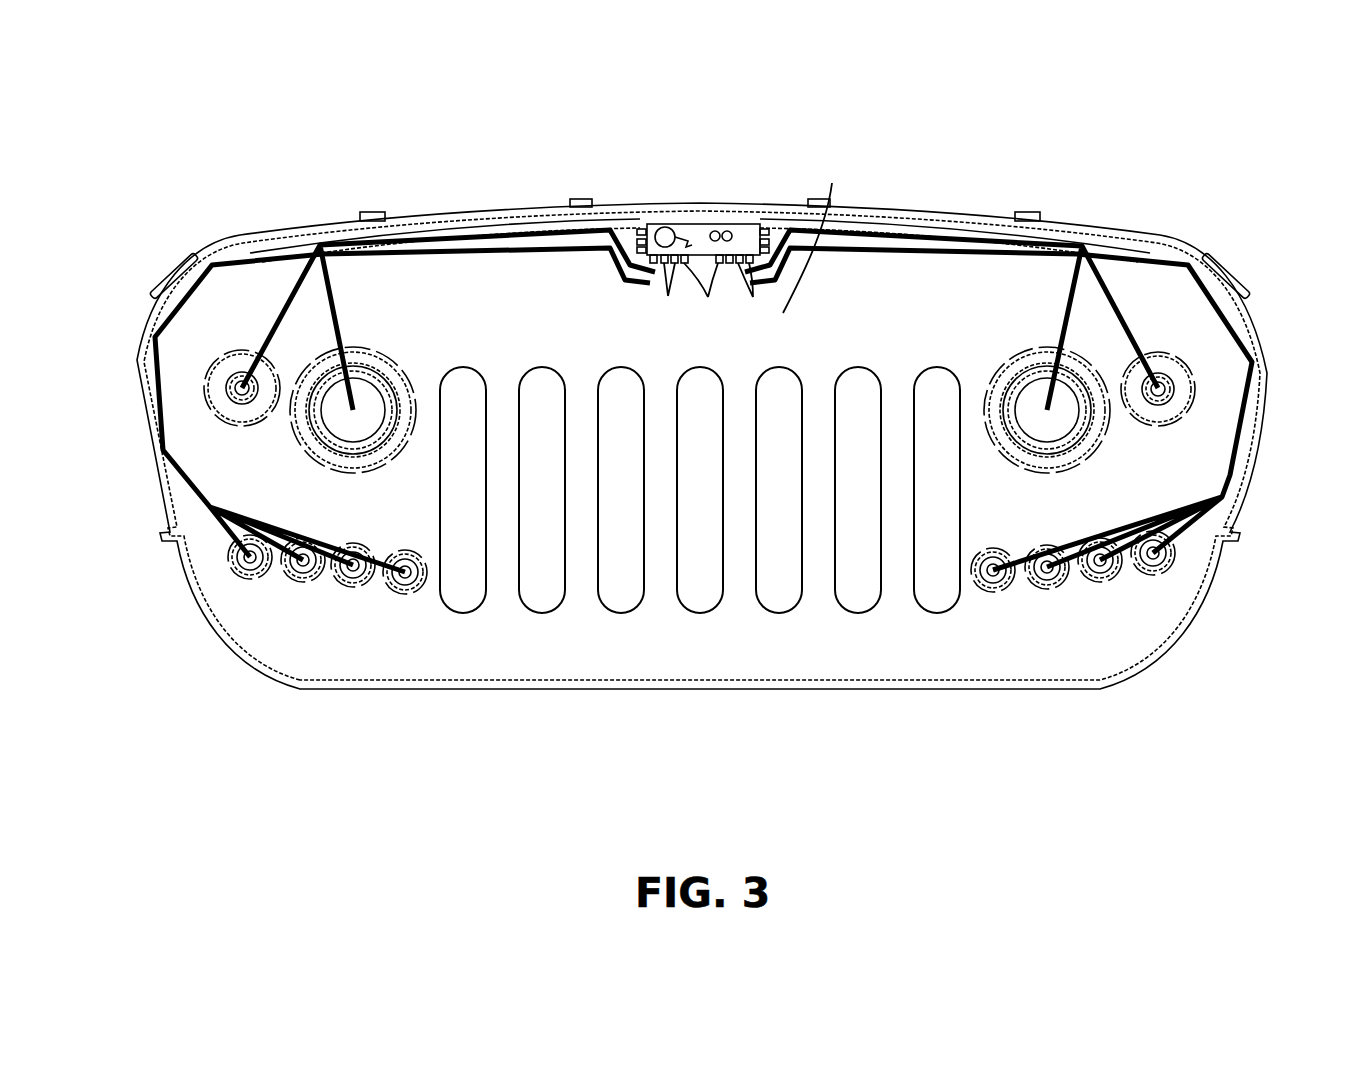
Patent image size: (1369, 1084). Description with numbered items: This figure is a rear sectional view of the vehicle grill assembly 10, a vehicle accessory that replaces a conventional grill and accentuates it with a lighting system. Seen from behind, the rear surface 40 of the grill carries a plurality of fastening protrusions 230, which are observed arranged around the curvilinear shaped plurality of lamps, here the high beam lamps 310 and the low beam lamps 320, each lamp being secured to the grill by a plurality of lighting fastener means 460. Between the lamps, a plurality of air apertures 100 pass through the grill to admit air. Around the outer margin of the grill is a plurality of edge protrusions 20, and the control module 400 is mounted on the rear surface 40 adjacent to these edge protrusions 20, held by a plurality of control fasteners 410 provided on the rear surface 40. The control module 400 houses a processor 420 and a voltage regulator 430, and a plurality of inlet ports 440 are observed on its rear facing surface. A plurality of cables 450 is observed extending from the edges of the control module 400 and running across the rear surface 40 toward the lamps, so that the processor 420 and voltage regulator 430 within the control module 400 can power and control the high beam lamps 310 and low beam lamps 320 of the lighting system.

The speaker assembly 10 is at (680, 158).
The edge protrusions 20 is at (425, 213).
The rear surface 40 is at (812, 234).
The air apertures 100 is at (625, 594).
The fastening protrusions 230 is at (258, 347).
The high beam lamps 310 is at (303, 420).
The low beam lamps 320 is at (218, 392).
The control module 400 is at (744, 214).
The control fasteners 410 is at (640, 230).
The processor 420 is at (658, 238).
The voltage regulator 430 is at (697, 228).
The inlet ports 440 is at (710, 293).
The cables 450 is at (258, 258).
The lighting fastener means 460 is at (217, 367).